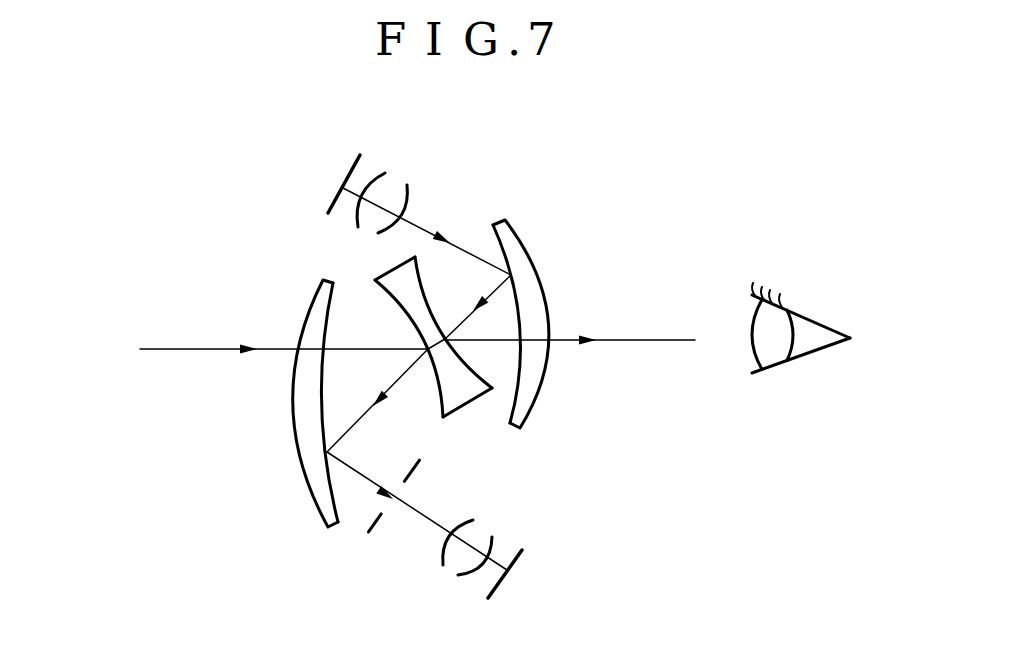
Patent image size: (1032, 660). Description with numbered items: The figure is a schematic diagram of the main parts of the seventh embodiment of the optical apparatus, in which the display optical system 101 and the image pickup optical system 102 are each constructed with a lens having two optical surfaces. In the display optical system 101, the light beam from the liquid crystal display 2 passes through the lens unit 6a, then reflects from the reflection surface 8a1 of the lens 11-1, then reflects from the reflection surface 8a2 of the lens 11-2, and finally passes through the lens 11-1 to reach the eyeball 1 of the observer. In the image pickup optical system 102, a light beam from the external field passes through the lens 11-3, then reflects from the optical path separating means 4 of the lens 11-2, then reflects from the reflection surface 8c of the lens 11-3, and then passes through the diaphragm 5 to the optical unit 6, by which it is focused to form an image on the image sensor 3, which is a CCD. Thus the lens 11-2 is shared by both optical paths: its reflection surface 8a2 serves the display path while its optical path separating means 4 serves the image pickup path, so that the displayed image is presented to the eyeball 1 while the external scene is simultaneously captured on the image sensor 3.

The eyeball 1 is at (798, 358).
The liquid crystal display 2 is at (353, 157).
The image sensor 3 is at (520, 562).
The optical path separating means 4 is at (395, 305).
The diaphragm 5 is at (375, 535).
The optical unit 6 is at (453, 567).
The lens unit 6a is at (395, 183).
The reflection surface 8a1 is at (517, 297).
The reflection surface 8a2 is at (472, 368).
The reflection surface 8c is at (322, 430).
The lens 11-1 is at (570, 335).
The lens 11-2 is at (475, 358).
The lens 11-3 is at (278, 431).
The display optical system 101 is at (489, 200).
The image pickup optical system 102 is at (258, 377).